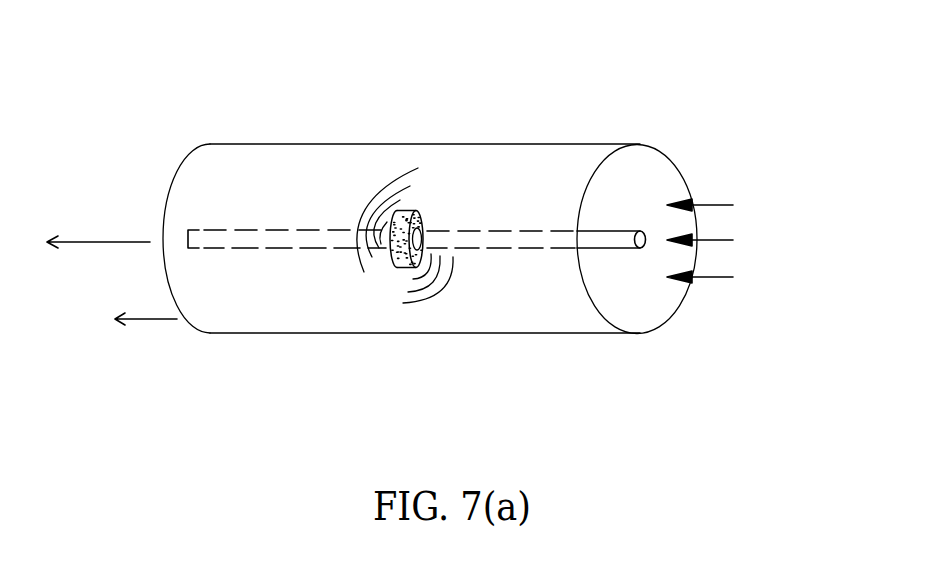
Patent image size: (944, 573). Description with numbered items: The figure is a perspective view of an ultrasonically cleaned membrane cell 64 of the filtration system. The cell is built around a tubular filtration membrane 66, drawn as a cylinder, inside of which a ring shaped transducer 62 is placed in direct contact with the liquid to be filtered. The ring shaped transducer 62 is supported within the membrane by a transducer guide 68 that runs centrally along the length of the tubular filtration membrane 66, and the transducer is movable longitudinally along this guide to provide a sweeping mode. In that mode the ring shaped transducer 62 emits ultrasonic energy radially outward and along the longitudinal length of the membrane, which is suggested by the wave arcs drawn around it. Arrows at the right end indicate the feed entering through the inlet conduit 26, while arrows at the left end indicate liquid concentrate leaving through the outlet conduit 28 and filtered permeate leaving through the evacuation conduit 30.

The ultrasonically cleaned membrane cell 64 is at (689, 94).
The tubular filtration membrane 66 is at (517, 298).
The transducer guide 68 is at (285, 242).
The ring shaped transducer 62 is at (423, 217).
The inlet conduit 26 is at (728, 241).
The outlet conduit 28 is at (98, 240).
The evacuation conduit 30 is at (155, 320).